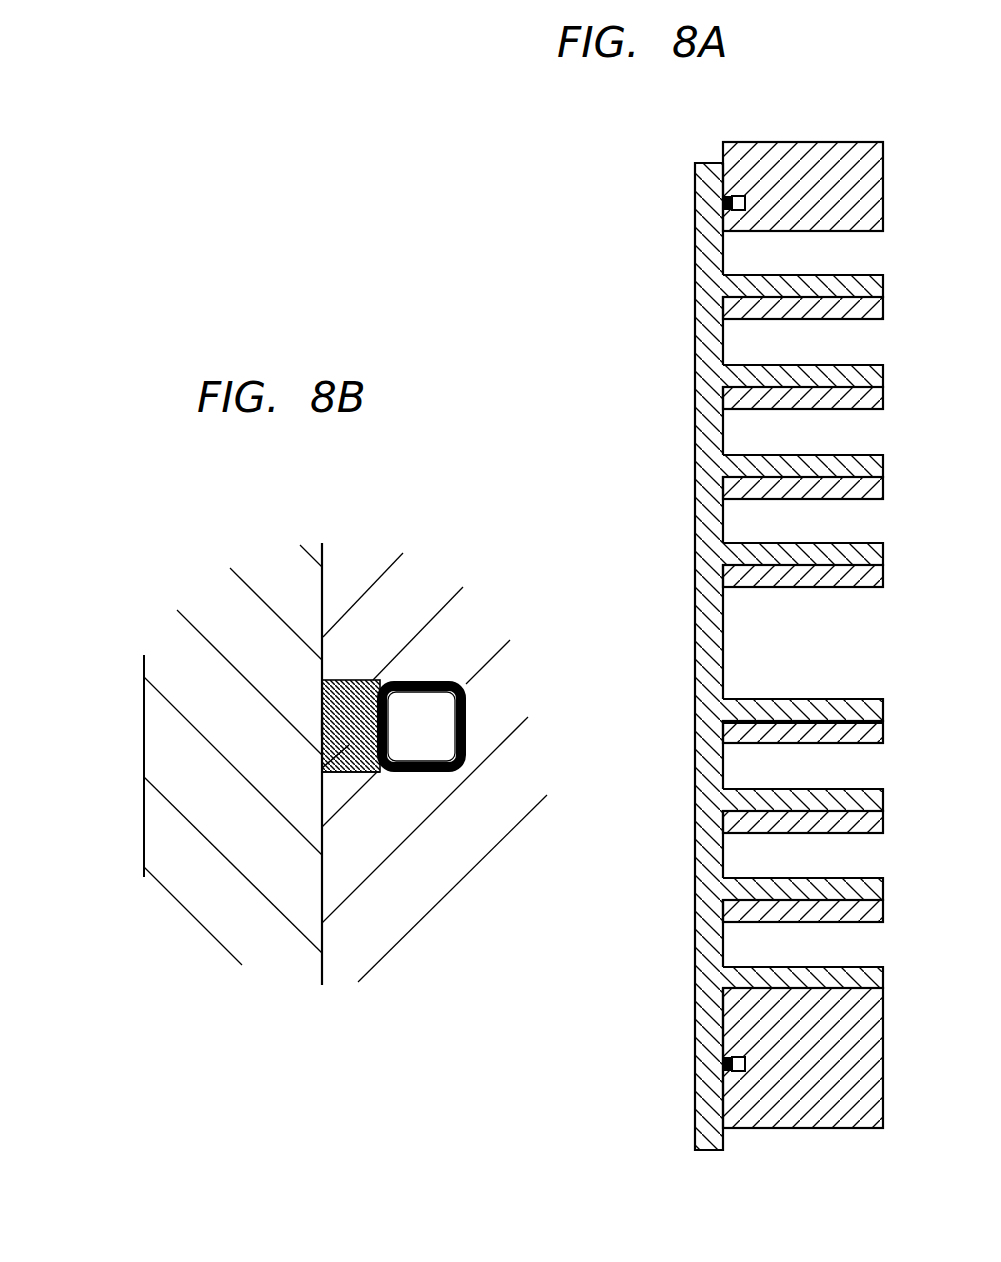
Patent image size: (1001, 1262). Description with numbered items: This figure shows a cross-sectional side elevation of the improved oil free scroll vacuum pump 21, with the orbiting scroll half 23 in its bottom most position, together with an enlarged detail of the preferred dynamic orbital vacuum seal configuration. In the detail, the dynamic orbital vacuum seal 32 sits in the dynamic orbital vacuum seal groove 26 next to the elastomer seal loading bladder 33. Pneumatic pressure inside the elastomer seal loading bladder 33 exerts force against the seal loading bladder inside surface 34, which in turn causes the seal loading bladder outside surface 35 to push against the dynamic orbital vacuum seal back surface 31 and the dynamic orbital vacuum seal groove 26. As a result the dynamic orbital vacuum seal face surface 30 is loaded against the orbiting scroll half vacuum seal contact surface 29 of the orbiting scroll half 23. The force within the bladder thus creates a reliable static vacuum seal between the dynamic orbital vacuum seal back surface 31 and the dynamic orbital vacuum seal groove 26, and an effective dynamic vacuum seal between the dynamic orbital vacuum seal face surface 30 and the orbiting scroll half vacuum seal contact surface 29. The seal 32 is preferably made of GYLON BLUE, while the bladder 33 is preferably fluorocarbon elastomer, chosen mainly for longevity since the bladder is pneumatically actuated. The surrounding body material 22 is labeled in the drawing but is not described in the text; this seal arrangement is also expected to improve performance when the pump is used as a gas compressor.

In FIG. 8A, the oil free scroll vacuum pump 21 is at (743, 142).
In FIG. 8B, the body material 22 is at (428, 885).
In FIG. 8B, the orbiting scroll half 23 is at (213, 692).
In FIG. 8B, the dynamic orbital vacuum seal groove 26 is at (470, 757).
In FIG. 8B, the orbiting scroll half vacuum seal contact surface 29 is at (323, 883).
In FIG. 8B, the dynamic orbital vacuum seal face surface 30 is at (322, 728).
In FIG. 8B, the dynamic orbital vacuum seal back surface 31 is at (371, 775).
In FIG. 8B, the dynamic orbital vacuum seal 32 is at (322, 768).
In FIG. 8B, the elastomer seal loading bladder 33 is at (470, 735).
In FIG. 8B, the seal loading bladder inside surface 34 is at (410, 760).
In FIG. 8B, the seal loading bladder outside surface 35 is at (380, 681).